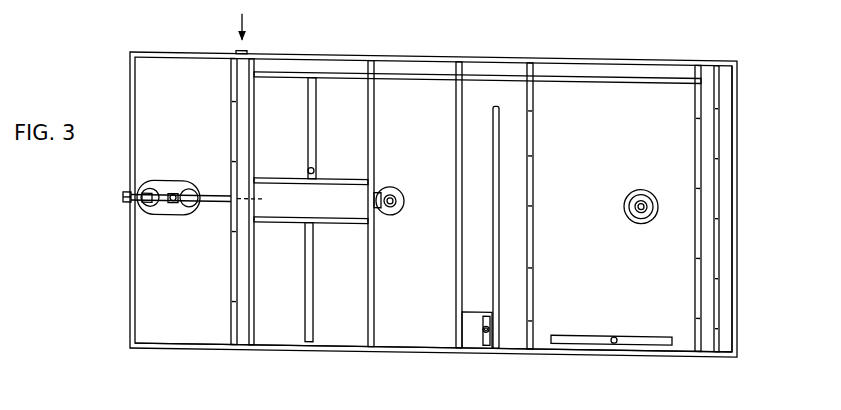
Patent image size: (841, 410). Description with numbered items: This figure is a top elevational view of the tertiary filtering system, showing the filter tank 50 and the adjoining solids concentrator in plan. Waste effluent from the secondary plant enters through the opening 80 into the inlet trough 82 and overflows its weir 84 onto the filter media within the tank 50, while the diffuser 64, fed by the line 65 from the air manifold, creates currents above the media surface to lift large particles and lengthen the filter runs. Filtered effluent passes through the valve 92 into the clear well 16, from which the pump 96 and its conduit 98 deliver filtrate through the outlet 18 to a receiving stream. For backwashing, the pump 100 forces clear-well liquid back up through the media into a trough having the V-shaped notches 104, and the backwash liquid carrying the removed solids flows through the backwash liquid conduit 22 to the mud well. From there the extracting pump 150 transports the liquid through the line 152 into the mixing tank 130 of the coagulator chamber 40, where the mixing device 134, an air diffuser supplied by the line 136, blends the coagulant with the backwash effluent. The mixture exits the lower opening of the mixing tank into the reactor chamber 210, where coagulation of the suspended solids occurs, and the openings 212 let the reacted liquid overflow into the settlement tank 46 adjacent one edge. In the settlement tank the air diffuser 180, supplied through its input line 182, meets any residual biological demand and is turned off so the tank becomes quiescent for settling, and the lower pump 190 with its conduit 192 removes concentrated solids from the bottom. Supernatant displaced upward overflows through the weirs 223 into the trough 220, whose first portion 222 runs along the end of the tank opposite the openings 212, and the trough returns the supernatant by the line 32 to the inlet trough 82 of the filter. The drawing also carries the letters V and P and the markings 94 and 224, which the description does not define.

The clear well 16 is at (165, 348).
The outlet 18 is at (124, 196).
The backwash liquid conduit 22 is at (378, 188).
The line 32 is at (567, 70).
The coagulator tank or chamber 40 is at (470, 350).
The settlement tank 46 is at (660, 297).
The tank 50 is at (337, 341).
The diffuser 64 is at (313, 280).
The line 65 is at (315, 168).
The opening 80 is at (245, 49).
The trough 82 is at (178, 153).
The weir 84 is at (255, 198).
The valve 92 is at (172, 203).
The first roller 94 is at (152, 189).
The pump 96 is at (150, 205).
The conduit 98 is at (143, 203).
The pump 100 is at (191, 190).
The V-shaped notches 104 is at (290, 222).
The mixing tank 130 is at (470, 306).
The mixing device 134 is at (483, 330).
The line 136 is at (490, 324).
The extracting pump 150 is at (401, 209).
The line 152 is at (392, 195).
The air diffuser 180 is at (587, 337).
The input line 182 is at (614, 330).
The lower pump 190 is at (641, 193).
The conduit 192 is at (641, 216).
The reactor chamber 210 is at (520, 182).
The openings 212 is at (533, 150).
The trough 220 is at (707, 293).
The first portion 222 is at (707, 96).
The weirs 223 is at (720, 186).
The inner front partition 224 is at (612, 70).
The pivot V is at (173, 194).
The shaft P is at (190, 205).